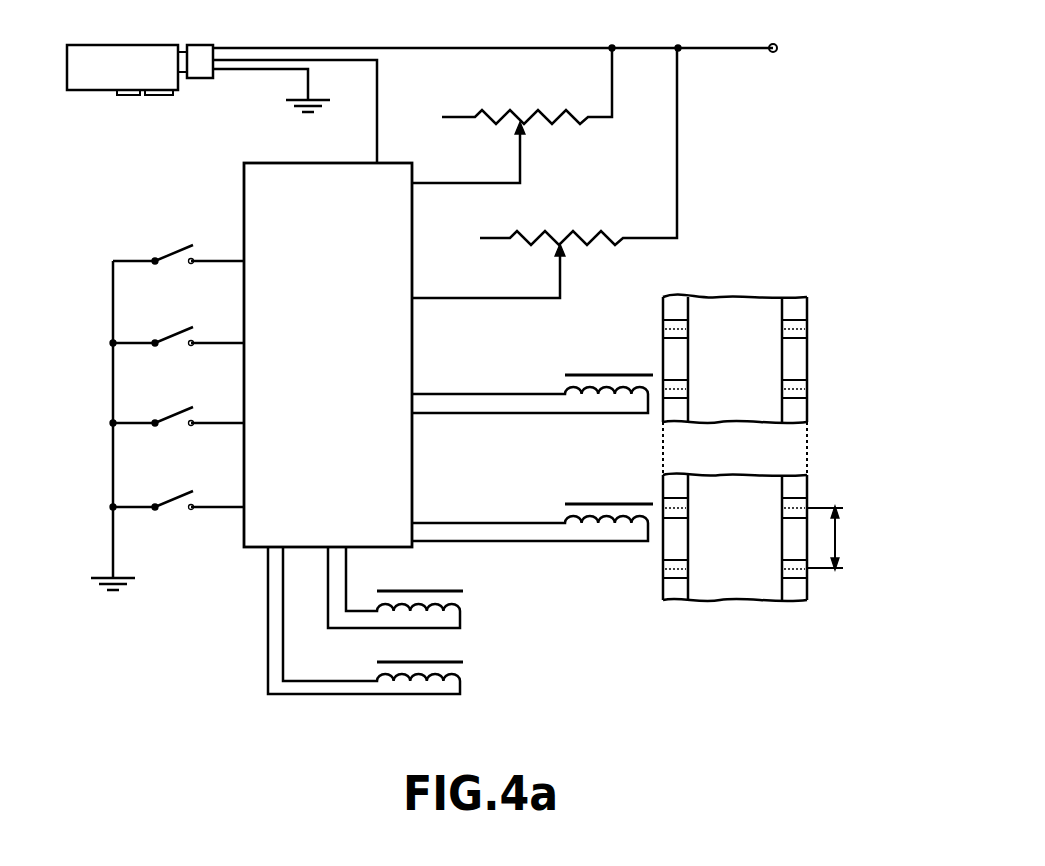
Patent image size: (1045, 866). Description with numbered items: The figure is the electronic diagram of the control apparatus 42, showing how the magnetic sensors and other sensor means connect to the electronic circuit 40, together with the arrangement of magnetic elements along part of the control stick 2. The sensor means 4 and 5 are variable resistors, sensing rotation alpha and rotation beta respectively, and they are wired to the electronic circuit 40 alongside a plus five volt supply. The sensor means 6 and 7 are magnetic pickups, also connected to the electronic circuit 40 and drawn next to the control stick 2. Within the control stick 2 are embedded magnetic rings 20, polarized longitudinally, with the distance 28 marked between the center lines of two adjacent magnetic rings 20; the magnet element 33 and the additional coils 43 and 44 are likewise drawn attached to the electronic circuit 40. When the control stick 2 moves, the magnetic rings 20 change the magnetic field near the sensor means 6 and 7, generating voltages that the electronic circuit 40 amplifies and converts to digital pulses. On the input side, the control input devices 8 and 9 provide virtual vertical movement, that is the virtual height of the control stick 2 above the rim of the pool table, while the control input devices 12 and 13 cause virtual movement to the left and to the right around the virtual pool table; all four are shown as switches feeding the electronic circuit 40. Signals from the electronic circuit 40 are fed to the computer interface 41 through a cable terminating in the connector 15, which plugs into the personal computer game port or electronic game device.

The control stick 2 is at (690, 296).
The sensor means 4 is at (544, 222).
The sensor means 5 is at (506, 102).
The sensor means 6 is at (558, 378).
The sensor means 7 is at (558, 503).
The control input device 8 is at (162, 252).
The control input device 9 is at (162, 334).
The control input device 12 is at (162, 414).
The control input device 13 is at (162, 498).
The connector 15 is at (212, 46).
The magnetic rings 20 is at (784, 318).
The distance between center lines 28 is at (842, 536).
The magnet 33 is at (798, 388).
The electronic circuit 40 is at (256, 540).
The computer interface 41 is at (106, 88).
The control apparatus 42 is at (848, 178).
The sensing coil 43 is at (468, 598).
The sensing coil 44 is at (468, 672).